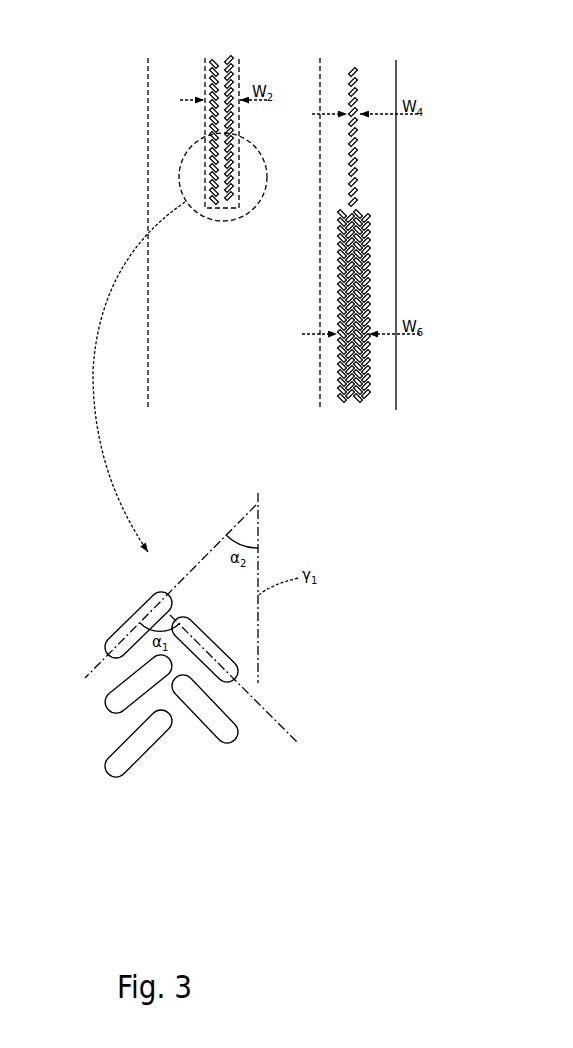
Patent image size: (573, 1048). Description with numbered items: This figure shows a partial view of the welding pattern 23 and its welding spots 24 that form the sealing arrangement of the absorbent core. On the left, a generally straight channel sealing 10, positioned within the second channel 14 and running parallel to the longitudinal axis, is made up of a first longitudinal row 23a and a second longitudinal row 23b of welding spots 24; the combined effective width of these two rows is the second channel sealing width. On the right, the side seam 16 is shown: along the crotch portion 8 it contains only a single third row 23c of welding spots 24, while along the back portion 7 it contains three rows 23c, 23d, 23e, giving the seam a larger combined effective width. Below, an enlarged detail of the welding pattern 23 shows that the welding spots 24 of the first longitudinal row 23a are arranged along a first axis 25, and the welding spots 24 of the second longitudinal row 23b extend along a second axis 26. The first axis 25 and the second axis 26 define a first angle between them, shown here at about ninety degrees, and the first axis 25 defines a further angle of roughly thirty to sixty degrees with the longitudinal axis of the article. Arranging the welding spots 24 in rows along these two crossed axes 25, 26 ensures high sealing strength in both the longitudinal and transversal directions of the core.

The back portion 7 is at (442, 288).
The crotch portion 8 is at (437, 81).
The channel sealing 10 is at (207, 78).
The second channel 14 is at (207, 120).
The side seam 16 is at (374, 333).
The welding pattern 23 is at (346, 185).
The first longitudinal row 23a is at (212, 58).
The second longitudinal row 23b is at (234, 58).
The third row 23c is at (352, 67).
The fourth row 23d is at (342, 400).
The fifth row 23e is at (358, 400).
The welding spots 24 is at (112, 705).
The first axis 25 is at (102, 662).
The second axis 26 is at (280, 722).